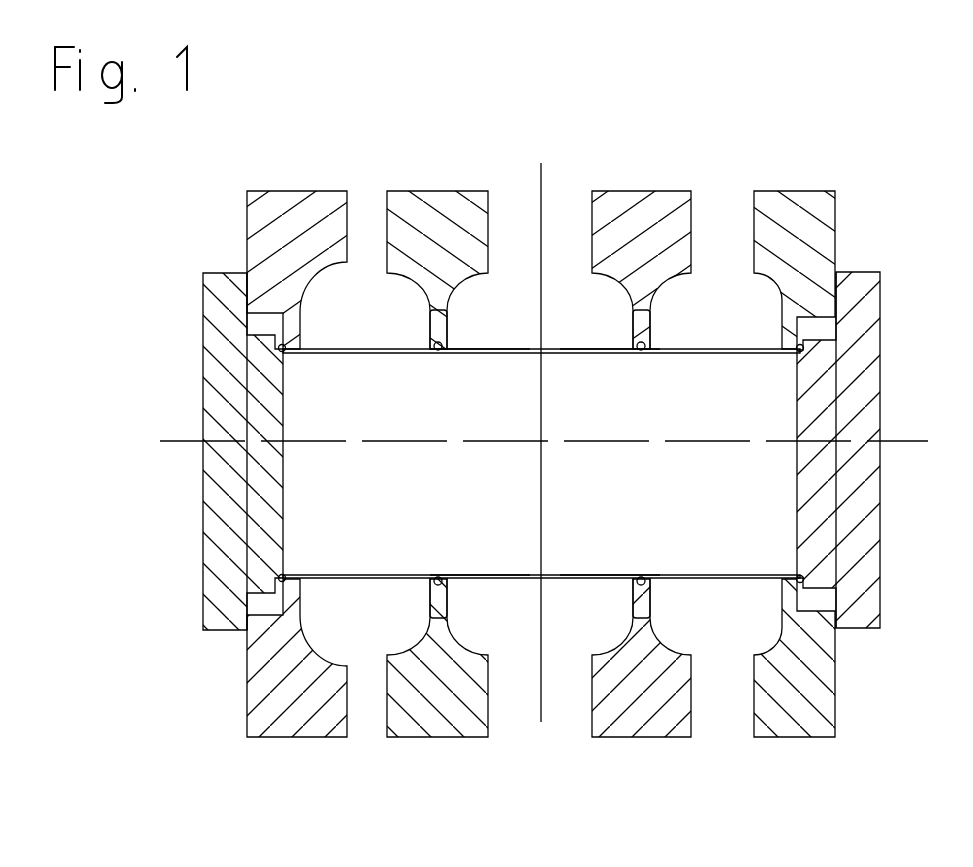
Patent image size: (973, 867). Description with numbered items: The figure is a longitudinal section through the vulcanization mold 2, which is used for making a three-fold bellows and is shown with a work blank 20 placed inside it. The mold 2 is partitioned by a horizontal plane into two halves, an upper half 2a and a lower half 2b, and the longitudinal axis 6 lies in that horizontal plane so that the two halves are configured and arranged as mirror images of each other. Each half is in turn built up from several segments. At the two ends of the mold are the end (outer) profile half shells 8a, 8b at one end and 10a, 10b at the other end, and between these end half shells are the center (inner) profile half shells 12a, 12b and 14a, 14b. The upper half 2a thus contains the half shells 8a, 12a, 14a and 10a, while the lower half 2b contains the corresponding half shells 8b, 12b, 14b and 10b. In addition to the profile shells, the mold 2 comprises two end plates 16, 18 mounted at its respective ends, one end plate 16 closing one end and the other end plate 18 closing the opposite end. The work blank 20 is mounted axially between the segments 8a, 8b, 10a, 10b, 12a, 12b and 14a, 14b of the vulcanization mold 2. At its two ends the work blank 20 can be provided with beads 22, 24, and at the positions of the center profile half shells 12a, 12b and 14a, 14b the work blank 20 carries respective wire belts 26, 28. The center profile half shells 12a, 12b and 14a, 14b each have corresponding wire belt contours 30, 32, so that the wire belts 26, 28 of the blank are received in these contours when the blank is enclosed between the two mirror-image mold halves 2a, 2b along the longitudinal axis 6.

The vulcanization mold 2 is at (650, 118).
The upper half 2a is at (717, 123).
The lower half 2b is at (698, 807).
The longitudinal axis 6 is at (890, 438).
The end profile half shell 8a is at (312, 208).
The end profile half shell 8b is at (283, 730).
The end profile half shell 10a is at (792, 203).
The end profile half shell 10b is at (768, 722).
The center profile half shell 12a is at (407, 213).
The center profile half shell 12b is at (453, 705).
The center profile half shell 14a is at (607, 214).
The center profile half shell 14b is at (642, 740).
The end plate 16 is at (213, 507).
The end plate 18 is at (870, 557).
The work blank 20 is at (337, 348).
The bead 22 is at (279, 347).
The bead 24 is at (803, 347).
The wire belt 26 is at (450, 348).
The wire belt 28 is at (650, 346).
The wire belt contour 30 is at (438, 310).
The wire belt contour 32 is at (641, 312).